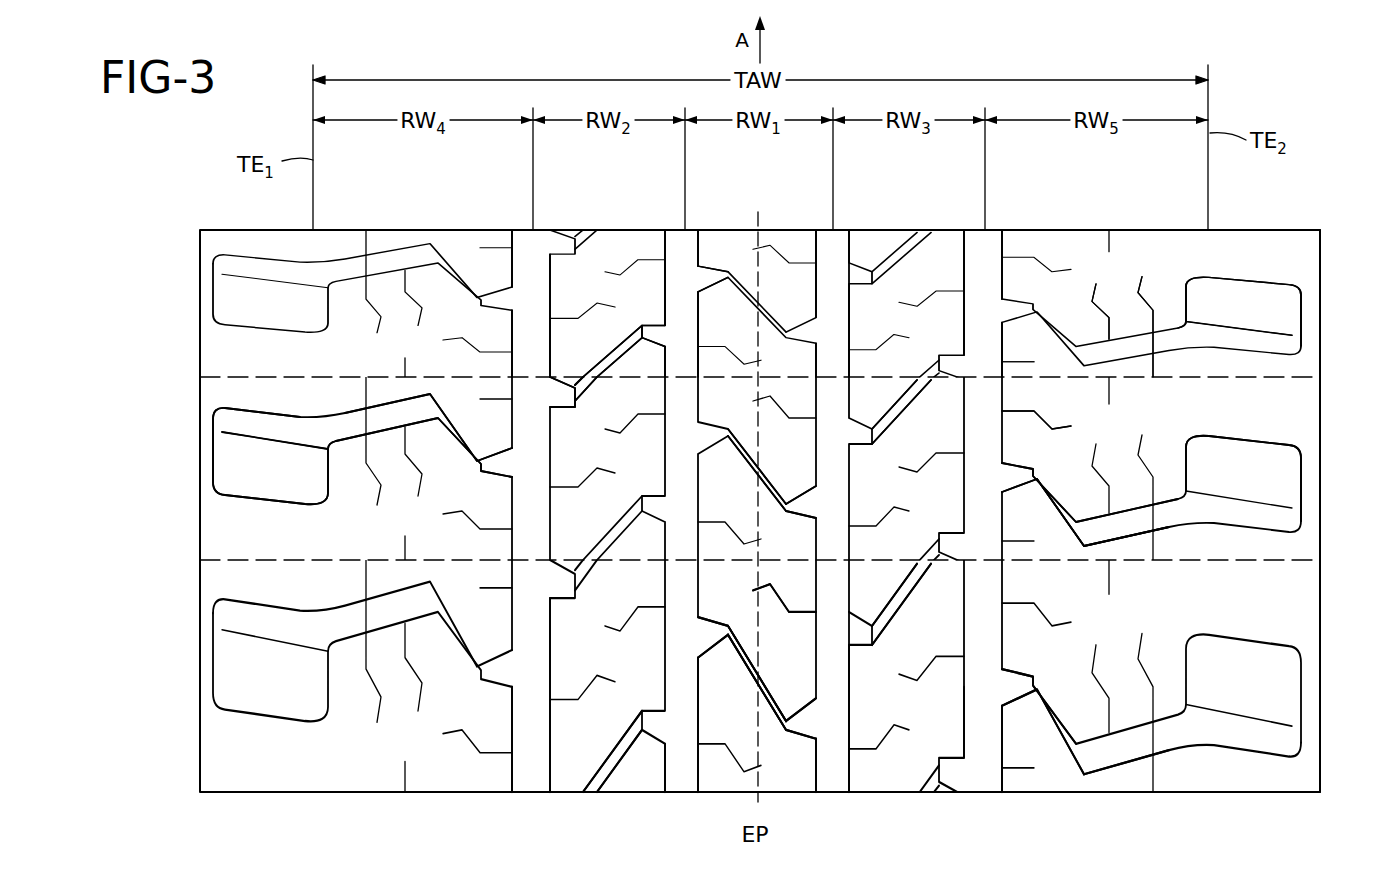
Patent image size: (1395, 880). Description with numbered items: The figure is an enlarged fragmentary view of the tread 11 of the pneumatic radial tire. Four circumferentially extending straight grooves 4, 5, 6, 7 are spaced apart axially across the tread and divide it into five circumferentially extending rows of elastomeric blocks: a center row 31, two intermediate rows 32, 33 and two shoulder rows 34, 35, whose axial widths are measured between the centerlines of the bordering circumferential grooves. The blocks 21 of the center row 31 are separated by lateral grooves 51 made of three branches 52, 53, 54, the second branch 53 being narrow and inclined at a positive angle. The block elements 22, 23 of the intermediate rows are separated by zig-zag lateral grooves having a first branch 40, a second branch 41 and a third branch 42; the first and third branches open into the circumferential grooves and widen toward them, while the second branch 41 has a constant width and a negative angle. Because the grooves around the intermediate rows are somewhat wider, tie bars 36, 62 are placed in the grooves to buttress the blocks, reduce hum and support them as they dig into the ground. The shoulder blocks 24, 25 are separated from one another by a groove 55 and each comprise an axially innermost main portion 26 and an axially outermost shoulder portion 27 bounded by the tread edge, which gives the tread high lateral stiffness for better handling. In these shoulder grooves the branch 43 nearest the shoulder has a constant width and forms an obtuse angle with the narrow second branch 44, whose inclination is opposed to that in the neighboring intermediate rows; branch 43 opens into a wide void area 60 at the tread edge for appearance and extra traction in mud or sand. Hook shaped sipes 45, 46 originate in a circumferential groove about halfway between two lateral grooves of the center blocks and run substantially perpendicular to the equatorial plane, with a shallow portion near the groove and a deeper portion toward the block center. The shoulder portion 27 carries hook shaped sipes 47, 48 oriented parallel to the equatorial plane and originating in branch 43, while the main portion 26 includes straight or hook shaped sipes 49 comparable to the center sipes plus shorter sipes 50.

The tread 11 is at (1348, 158).
The circumferentially extending straight groove 4 is at (526, 790).
The circumferentially extending straight groove 5 is at (681, 790).
The circumferentially extending straight groove 6 is at (829, 790).
The circumferentially extending straight groove 7 is at (979, 790).
The center row block element 21 is at (780, 640).
The intermediate row block element 22 is at (582, 512).
The intermediate row block element 23 is at (860, 592).
The shoulder row block element 24 is at (352, 529).
The shoulder row block element 25 is at (1077, 706).
The main portion 26 is at (1032, 472).
The shoulder portion 27 is at (1170, 414).
The center row 31 is at (728, 214).
The intermediate row 32 is at (596, 214).
The intermediate row 33 is at (898, 214).
The shoulder row 34 is at (410, 214).
The shoulder row 35 is at (1073, 214).
The tie bar 36 is at (603, 773).
The first branch 40 is at (570, 398).
The second branch 41 is at (594, 390).
The third branch 42 is at (657, 332).
The third branch nearest to the shoulder 43 is at (1125, 526).
The second branch 44 is at (1047, 512).
The hook shaped sipe 45 is at (722, 352).
The hook shaped sipe 46 is at (774, 415).
The hook shaped sipe 47 is at (1097, 289).
The hook shaped sipe 48 is at (1135, 305).
The sipe 49 is at (1045, 416).
The shorter sipe 50 is at (1020, 355).
The lateral groove 51 is at (742, 456).
The branch 52 is at (705, 628).
The second branch 53 is at (738, 658).
The branch 54 is at (797, 722).
The groove 55 is at (1115, 751).
The wide void area 60 is at (1280, 316).
The tie bar 62 is at (900, 405).